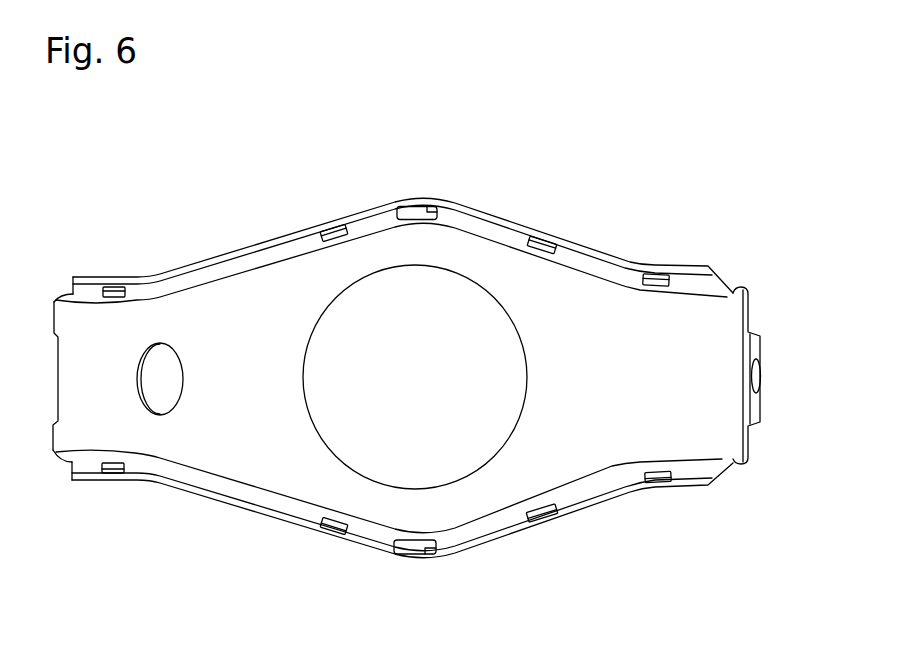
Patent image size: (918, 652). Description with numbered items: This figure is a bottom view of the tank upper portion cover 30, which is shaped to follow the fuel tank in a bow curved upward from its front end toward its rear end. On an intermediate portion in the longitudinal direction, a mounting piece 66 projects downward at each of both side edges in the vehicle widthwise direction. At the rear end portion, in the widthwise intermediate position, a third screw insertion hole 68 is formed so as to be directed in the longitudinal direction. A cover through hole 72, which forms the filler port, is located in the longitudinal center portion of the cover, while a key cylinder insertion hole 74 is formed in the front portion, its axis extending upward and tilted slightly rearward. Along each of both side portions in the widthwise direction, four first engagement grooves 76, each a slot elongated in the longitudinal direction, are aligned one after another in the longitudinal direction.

The tank upper portion cover 30 is at (705, 220).
The mounting piece 66 is at (413, 208).
The third screw insertion hole 68 is at (762, 373).
The cover through hole 72 is at (421, 266).
The key cylinder insertion hole 74 is at (157, 405).
The first engagement groove 76 is at (120, 288).